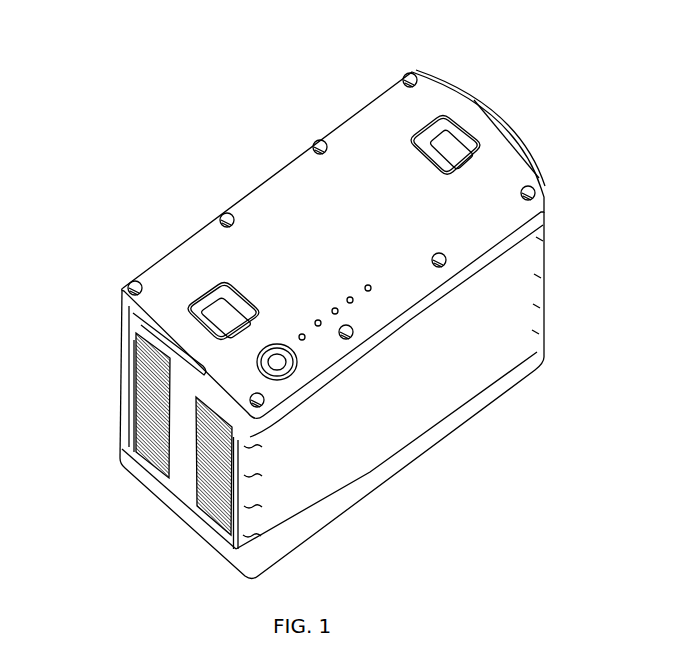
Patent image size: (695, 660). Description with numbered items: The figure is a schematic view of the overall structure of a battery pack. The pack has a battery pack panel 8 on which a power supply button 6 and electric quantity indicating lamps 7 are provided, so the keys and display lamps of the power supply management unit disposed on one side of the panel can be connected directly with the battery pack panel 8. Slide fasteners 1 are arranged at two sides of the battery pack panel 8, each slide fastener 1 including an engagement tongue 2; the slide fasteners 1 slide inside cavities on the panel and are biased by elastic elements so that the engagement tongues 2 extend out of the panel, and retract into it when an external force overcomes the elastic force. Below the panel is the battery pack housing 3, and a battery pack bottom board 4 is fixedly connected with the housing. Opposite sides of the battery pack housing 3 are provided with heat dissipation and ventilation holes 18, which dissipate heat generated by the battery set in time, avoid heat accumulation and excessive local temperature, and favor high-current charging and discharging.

The slide fastener 1 is at (205, 300).
The engagement tongue 2 is at (120, 310).
The battery pack housing 3 is at (455, 392).
The battery pack bottom board 4 is at (407, 465).
The power supply button 6 is at (276, 343).
The electric quantity indicating lamp 7 is at (317, 320).
The battery pack panel 8 is at (510, 165).
The heat dissipation and ventilation hole 18 is at (122, 460).